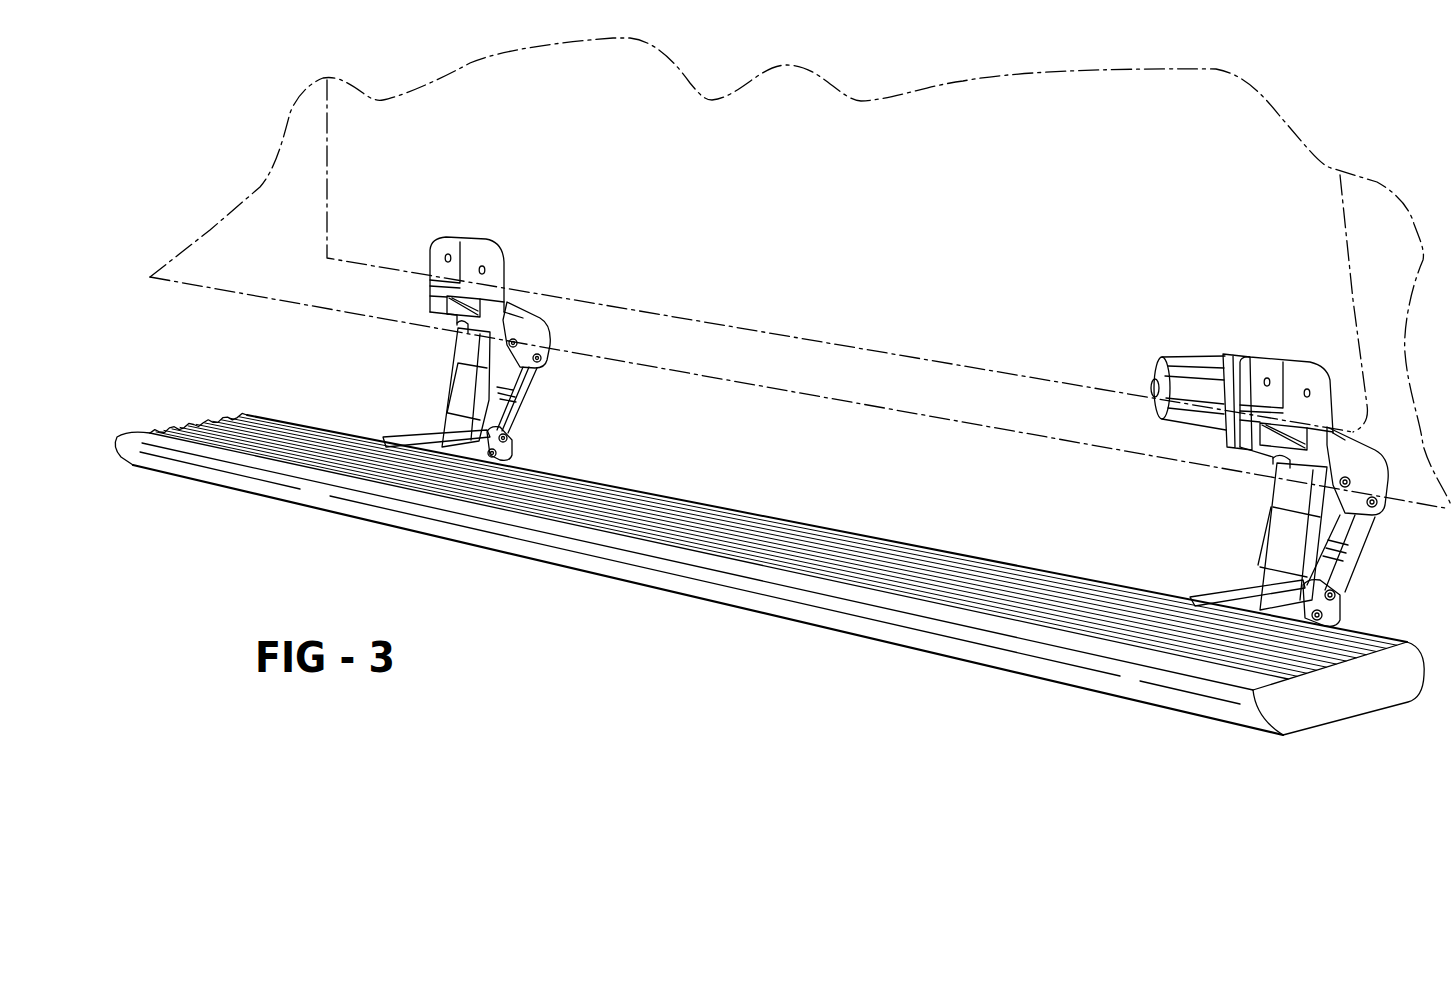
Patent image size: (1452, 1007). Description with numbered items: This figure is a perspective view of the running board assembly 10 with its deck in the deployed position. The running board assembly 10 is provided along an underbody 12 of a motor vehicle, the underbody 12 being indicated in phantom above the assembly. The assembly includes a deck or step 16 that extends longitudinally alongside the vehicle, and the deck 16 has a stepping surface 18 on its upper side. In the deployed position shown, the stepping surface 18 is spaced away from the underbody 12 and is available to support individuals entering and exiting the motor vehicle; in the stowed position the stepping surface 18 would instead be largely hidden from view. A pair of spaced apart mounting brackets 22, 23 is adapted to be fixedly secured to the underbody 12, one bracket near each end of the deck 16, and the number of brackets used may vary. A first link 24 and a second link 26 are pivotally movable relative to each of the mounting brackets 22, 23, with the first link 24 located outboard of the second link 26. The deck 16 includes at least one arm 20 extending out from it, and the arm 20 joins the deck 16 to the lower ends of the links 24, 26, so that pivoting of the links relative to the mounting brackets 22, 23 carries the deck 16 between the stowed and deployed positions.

The running board assembly 10 is at (715, 614).
The underbody 12 is at (746, 387).
The deck 16 is at (873, 640).
The stepping surface 18 is at (615, 516).
The arm 20 is at (510, 453).
The mounting bracket 22 is at (1300, 363).
The mounting bracket 23 is at (503, 262).
The first link 24 is at (446, 374).
The second link 26 is at (532, 400).